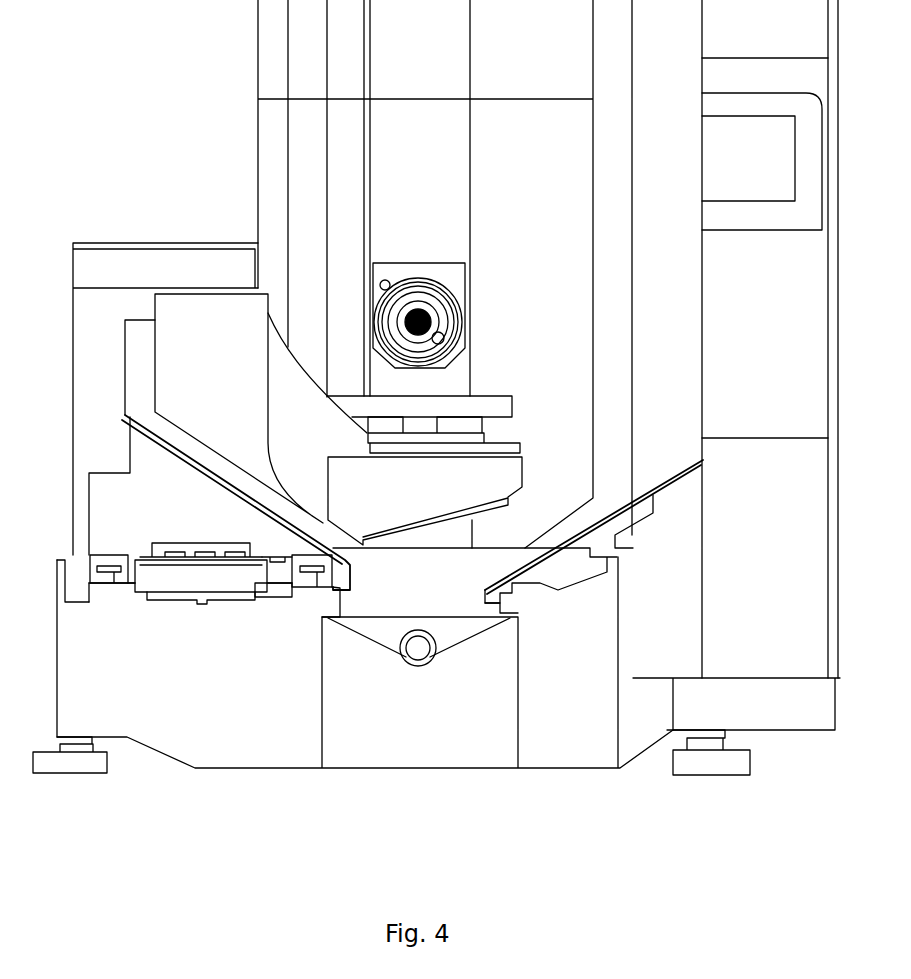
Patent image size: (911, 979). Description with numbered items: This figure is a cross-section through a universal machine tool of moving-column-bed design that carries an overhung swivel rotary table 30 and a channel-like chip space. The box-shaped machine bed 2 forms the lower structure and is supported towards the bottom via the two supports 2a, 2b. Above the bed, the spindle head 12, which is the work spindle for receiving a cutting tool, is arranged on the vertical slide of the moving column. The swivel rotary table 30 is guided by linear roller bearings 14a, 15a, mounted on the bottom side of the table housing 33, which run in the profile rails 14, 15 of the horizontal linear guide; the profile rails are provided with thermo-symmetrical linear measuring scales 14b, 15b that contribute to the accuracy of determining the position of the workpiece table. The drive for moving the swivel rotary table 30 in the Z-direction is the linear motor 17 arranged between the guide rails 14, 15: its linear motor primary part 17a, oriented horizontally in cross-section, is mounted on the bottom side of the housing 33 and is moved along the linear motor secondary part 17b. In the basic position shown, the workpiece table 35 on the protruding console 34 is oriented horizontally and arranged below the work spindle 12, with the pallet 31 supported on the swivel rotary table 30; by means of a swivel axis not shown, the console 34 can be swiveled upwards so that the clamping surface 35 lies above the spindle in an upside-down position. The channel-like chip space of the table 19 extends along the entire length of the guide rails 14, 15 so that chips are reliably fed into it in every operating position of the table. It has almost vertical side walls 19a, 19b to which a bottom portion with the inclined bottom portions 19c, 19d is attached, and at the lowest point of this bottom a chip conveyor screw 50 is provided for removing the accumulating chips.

The machine bed 2 is at (224, 770).
The support 2a is at (73, 773).
The support 2b is at (713, 775).
The spindle head 12 is at (432, 277).
The profile rail 14 is at (287, 600).
The linear roller bearing 14a is at (282, 558).
The linear measuring scale 14b is at (253, 600).
The profile rail 15 is at (105, 600).
The linear roller bearing 15a is at (70, 556).
The linear measuring scale 15b is at (127, 600).
The linear motor 17 is at (147, 598).
The linear motor primary part 17a is at (168, 558).
The linear motor secondary part 17b is at (177, 602).
The table 19 is at (335, 565).
The side wall 19a is at (508, 598).
The side wall 19b is at (320, 603).
The inclined bottom portion 19c is at (482, 638).
The inclined bottom portion 19d is at (370, 643).
The swivel rotary table 30 is at (123, 387).
The pallet 31 is at (512, 405).
The table housing 33 is at (228, 376).
The console 34 is at (438, 508).
The workpiece table 35 is at (505, 397).
The chip conveyor screw 50 is at (432, 665).